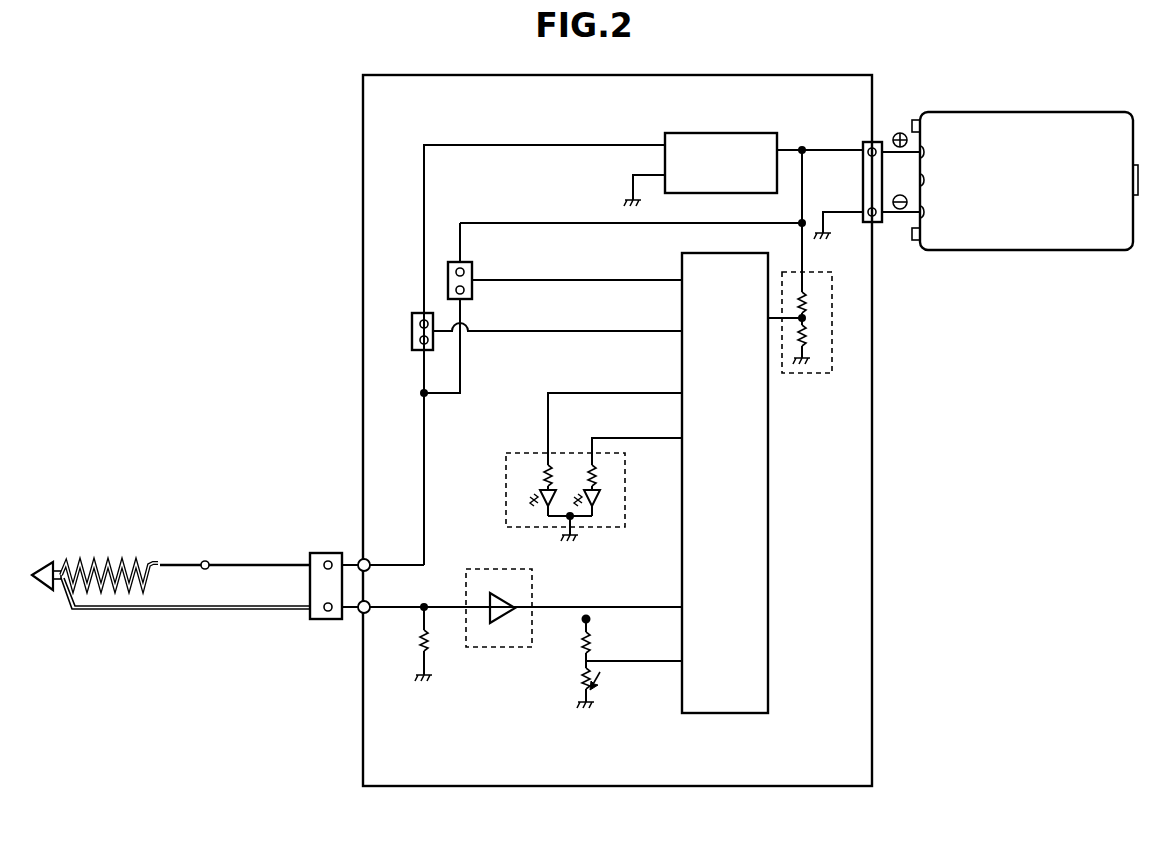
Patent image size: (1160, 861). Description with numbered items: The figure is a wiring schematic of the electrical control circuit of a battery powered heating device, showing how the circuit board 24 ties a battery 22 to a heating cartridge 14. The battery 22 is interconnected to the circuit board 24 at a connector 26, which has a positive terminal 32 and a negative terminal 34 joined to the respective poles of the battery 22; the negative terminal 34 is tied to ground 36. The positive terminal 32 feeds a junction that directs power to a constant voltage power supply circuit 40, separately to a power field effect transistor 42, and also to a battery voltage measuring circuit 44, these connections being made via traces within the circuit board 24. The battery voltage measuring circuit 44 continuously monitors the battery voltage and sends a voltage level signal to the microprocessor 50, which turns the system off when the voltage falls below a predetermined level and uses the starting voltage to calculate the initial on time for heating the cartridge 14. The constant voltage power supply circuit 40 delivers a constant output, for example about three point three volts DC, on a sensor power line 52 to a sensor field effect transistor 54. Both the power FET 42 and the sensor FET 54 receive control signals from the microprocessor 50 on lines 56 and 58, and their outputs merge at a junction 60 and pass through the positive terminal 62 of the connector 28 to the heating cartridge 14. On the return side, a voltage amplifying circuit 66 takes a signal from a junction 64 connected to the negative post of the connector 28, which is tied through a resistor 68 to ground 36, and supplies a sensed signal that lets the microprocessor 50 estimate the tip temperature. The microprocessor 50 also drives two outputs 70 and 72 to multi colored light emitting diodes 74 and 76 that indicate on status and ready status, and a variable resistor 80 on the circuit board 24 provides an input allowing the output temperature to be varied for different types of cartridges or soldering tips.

The heating cartridge 14 is at (150, 548).
The battery 22 is at (1017, 250).
The circuit board 24 is at (873, 590).
The connector 26 is at (878, 133).
The connector 28 is at (310, 553).
The positive terminal 32 is at (885, 141).
The negative terminal 34 is at (882, 222).
The ground 36 is at (830, 241).
The constant voltage power supply circuit 40 is at (745, 133).
The power field effect transistor 42 is at (447, 270).
The battery voltage measuring circuit 44 is at (814, 349).
The microprocessor 50 is at (770, 488).
The sensor power line 52 is at (424, 178).
The sensor field effect transistor 54 is at (405, 335).
The control line 56 is at (520, 280).
The control line 58 is at (530, 331).
The junction 60 is at (432, 398).
The positive terminal 62 is at (328, 553).
The junction 64 is at (424, 606).
The voltage amplifying circuit 66 is at (500, 627).
The resistor 68 is at (432, 645).
The output 70 is at (565, 393).
The output 72 is at (612, 438).
The multi colored light emitting diode 74 is at (535, 490).
The multi colored light emitting diode 76 is at (600, 488).
The variable resistor 80 is at (598, 678).